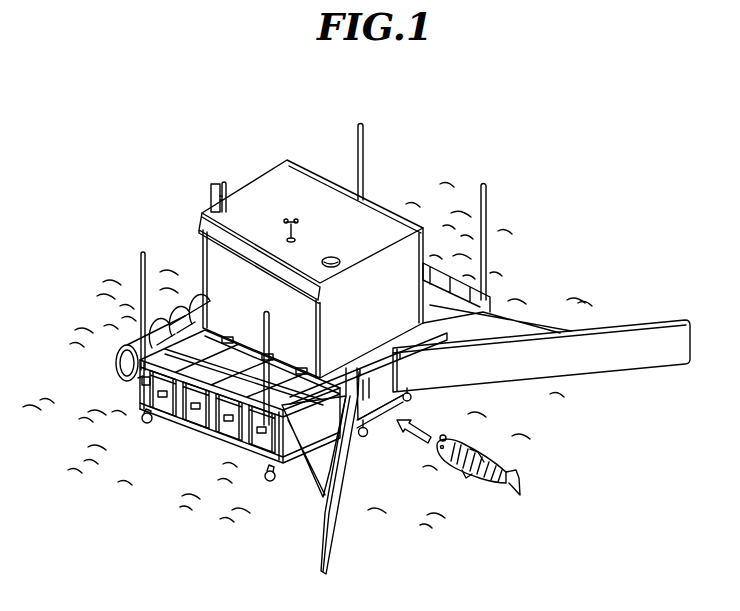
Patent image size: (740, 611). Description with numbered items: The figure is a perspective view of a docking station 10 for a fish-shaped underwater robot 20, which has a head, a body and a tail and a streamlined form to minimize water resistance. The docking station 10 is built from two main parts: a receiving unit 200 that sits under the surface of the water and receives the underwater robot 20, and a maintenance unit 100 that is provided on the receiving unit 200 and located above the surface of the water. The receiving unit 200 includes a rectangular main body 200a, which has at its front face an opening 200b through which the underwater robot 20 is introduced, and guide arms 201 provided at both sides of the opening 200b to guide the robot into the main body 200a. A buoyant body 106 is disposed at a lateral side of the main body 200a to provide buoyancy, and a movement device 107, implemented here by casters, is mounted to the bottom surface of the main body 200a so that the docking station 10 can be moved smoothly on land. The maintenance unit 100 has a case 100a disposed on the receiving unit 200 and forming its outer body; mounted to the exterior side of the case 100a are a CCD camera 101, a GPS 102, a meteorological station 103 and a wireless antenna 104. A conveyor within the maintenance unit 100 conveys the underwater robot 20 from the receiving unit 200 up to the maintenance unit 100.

The docking station 10 is at (432, 108).
The underwater robot 20 is at (496, 447).
The maintenance unit 100 is at (399, 190).
The case 100a is at (206, 248).
The CCD camera 101 is at (377, 262).
The GPS 102 is at (331, 257).
The meteorological station 103 is at (291, 219).
The wireless antenna 104 is at (210, 190).
The buoyant body 106 is at (142, 381).
The movement device 107 is at (150, 426).
The receiving unit 200 is at (503, 291).
The main body 200a is at (223, 405).
The opening 200b is at (385, 395).
The guide arms 201 is at (653, 330).